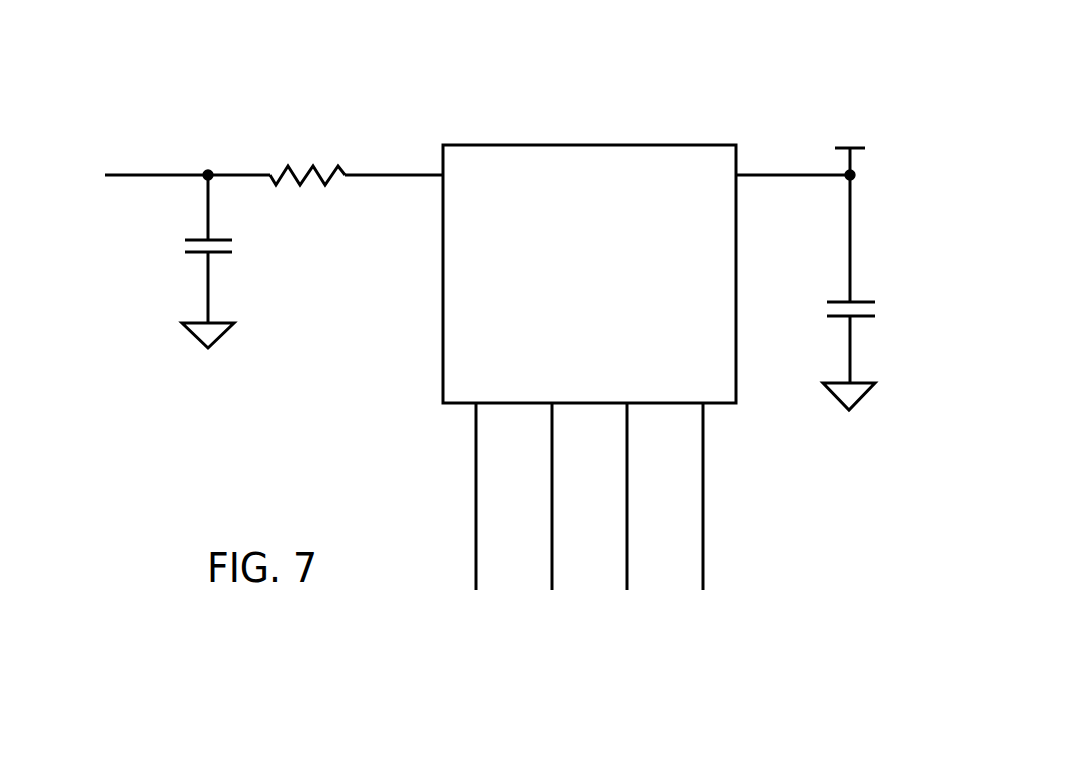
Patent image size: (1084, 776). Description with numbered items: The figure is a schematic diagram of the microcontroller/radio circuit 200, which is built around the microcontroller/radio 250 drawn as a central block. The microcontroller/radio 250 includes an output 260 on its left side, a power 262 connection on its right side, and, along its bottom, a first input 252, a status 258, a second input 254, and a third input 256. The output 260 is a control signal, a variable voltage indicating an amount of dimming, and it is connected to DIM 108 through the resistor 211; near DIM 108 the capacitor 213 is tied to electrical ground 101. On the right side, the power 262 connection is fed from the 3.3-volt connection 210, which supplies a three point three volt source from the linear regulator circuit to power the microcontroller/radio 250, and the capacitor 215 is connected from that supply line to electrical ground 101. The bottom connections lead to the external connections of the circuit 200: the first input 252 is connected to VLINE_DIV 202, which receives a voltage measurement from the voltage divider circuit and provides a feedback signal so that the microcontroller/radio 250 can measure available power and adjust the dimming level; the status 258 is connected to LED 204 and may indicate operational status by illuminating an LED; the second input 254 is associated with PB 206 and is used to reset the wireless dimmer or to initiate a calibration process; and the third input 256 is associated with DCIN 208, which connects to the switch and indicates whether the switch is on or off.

The microcontroller/radio circuit 200 is at (188, 82).
The DIM 108 is at (100, 174).
The resistor 211 is at (302, 166).
The capacitor 213 is at (220, 255).
The electrical ground 101 is at (195, 333).
The output 260 is at (436, 168).
The microcontroller/radio 250 is at (573, 145).
The power 262 is at (747, 168).
The 3.3-volt connection 210 is at (870, 150).
The capacitor 215 is at (855, 302).
The first input 252 is at (489, 410).
The status 258 is at (565, 410).
The second input 254 is at (641, 410).
The third input 256 is at (717, 410).
The VLINE_DIV 202 is at (457, 597).
The LED 204 is at (532, 597).
The PB 206 is at (609, 597).
The DCIN 208 is at (684, 597).